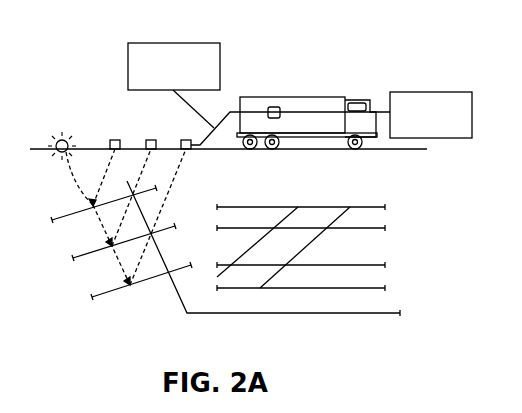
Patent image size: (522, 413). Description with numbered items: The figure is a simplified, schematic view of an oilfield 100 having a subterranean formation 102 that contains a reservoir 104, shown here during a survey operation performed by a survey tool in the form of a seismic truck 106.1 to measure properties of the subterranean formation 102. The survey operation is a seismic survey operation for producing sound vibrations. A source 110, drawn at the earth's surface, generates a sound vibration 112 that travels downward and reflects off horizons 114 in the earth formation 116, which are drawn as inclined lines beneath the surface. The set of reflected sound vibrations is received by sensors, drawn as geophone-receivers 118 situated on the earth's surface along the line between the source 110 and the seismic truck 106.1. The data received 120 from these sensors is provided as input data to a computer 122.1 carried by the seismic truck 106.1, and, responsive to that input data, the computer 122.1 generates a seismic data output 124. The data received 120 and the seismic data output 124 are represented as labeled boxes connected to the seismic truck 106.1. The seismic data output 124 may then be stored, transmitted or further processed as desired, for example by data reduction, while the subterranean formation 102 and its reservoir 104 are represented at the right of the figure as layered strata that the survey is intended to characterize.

The oilfield 100 is at (398, 65).
The subterranean formation 102 is at (372, 193).
The reservoir 104 is at (336, 255).
The seismic truck 106.1 is at (327, 97).
The source 110 is at (56, 139).
The sound vibration 112 is at (72, 172).
The horizons 114 is at (52, 219).
The earth formation 116 is at (178, 293).
The geophone-receivers 118 is at (111, 140).
The data received 120 is at (153, 43).
The computer 122.1 is at (274, 107).
The seismic data output 124 is at (446, 91).